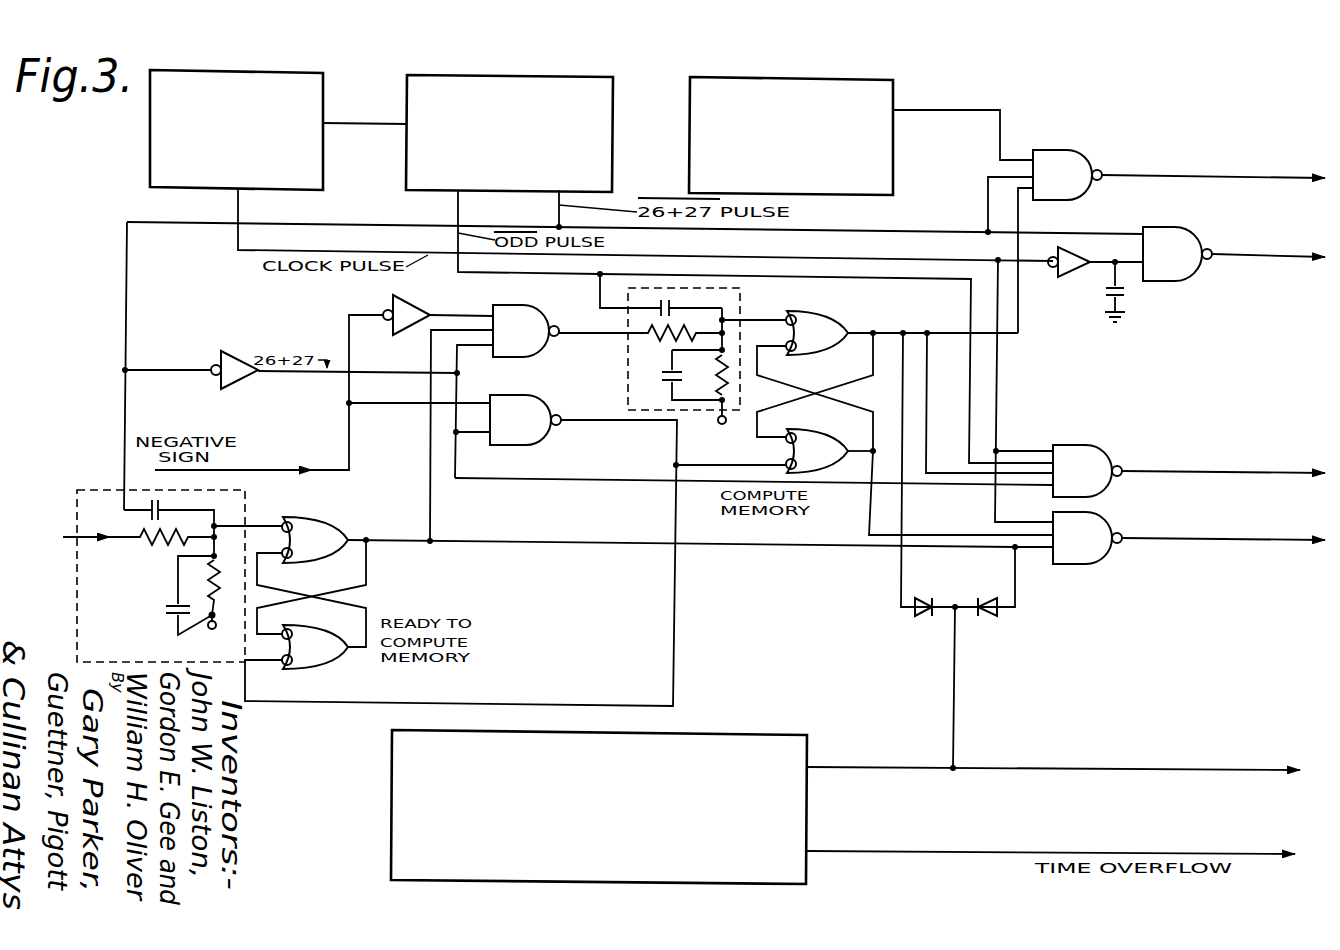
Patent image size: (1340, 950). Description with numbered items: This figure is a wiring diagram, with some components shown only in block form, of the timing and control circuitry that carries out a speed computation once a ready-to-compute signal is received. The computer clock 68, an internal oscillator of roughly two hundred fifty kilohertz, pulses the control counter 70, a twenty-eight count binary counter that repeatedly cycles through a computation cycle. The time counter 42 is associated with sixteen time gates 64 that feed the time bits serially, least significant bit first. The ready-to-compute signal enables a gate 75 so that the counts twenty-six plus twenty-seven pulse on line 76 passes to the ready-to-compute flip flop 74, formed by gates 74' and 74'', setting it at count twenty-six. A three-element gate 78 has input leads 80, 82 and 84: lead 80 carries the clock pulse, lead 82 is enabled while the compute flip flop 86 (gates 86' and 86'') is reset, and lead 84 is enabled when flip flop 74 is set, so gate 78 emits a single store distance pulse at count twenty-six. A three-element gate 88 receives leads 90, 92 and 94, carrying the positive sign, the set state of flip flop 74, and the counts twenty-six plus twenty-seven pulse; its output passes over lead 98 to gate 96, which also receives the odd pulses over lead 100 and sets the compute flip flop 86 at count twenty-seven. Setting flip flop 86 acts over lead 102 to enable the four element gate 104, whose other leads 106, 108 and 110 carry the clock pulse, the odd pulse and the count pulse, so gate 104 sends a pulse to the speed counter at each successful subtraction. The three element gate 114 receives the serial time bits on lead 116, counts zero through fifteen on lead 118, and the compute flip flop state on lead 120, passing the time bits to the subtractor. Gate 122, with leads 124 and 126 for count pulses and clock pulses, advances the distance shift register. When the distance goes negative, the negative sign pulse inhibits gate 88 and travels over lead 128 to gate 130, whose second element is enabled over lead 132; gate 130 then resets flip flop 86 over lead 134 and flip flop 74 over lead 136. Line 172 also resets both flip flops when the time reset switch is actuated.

The time counter 42 is at (618, 844).
The time gates 64 is at (800, 176).
The computer clock 68 is at (242, 172).
The control counter 70 is at (526, 174).
The ready-to-compute flip flop 74 is at (337, 593).
The gate 74' is at (648, 529).
The gate 74'' is at (332, 659).
The gate 75 is at (232, 603).
The line 76 is at (125, 311).
The three-element gate 78 is at (1090, 564).
The input lead 80 is at (993, 506).
The input lead 82 is at (983, 548).
The input lead 84 is at (1036, 552).
The compute flip flop 86 is at (817, 377).
The gate 86' is at (902, 321).
The gate 86'' is at (829, 439).
The three-element gate 88 is at (540, 299).
The input lead 90 is at (455, 303).
The input lead 92 is at (431, 351).
The input lead 94 is at (463, 362).
The gate 96 is at (624, 386).
The lead 98 is at (612, 336).
The lead 100 is at (600, 305).
The lead 102 is at (927, 455).
The four element gate 104 is at (1100, 462).
The input lead 106 is at (1022, 450).
The input lead 108 is at (970, 310).
The input lead 110 is at (1040, 488).
The three element gate 114 is at (1075, 158).
The input lead 116 is at (1000, 137).
The input lead 118 is at (988, 197).
The input lead 120 is at (1020, 213).
The gate 122 is at (1178, 228).
The input lead 124 is at (1107, 232).
The input lead 126 is at (1123, 266).
The lead 128 is at (397, 405).
The gate 130 is at (534, 446).
The lead 132 is at (475, 434).
The lead 134 is at (706, 467).
The lead 136 is at (545, 703).
The line 172 is at (953, 682).